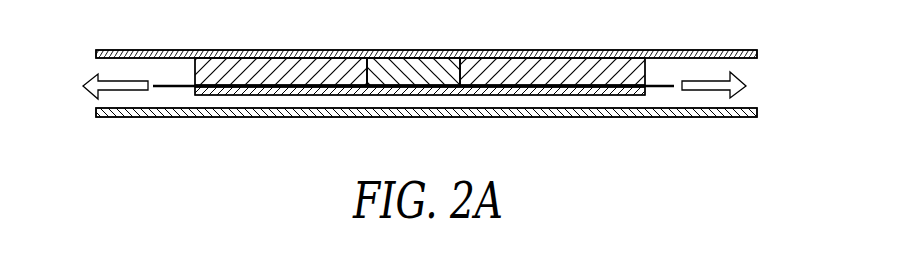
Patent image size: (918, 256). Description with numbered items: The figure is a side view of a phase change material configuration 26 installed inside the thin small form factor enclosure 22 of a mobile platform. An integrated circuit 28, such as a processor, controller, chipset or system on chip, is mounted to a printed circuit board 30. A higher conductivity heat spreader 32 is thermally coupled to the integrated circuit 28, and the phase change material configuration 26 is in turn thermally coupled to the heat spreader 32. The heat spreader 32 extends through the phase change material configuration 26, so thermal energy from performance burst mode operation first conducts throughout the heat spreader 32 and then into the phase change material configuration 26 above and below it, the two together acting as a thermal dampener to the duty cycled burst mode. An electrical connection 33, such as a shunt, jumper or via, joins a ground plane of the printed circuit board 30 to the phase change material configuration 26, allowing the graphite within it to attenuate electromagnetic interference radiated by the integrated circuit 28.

The small form factor enclosure 22 is at (716, 117).
The phase change material configuration 26 is at (247, 95).
The integrated circuit 28 is at (387, 63).
The printed circuit board 30 is at (712, 50).
The heat spreader 32 is at (645, 88).
The electrical connection 33 is at (627, 63).